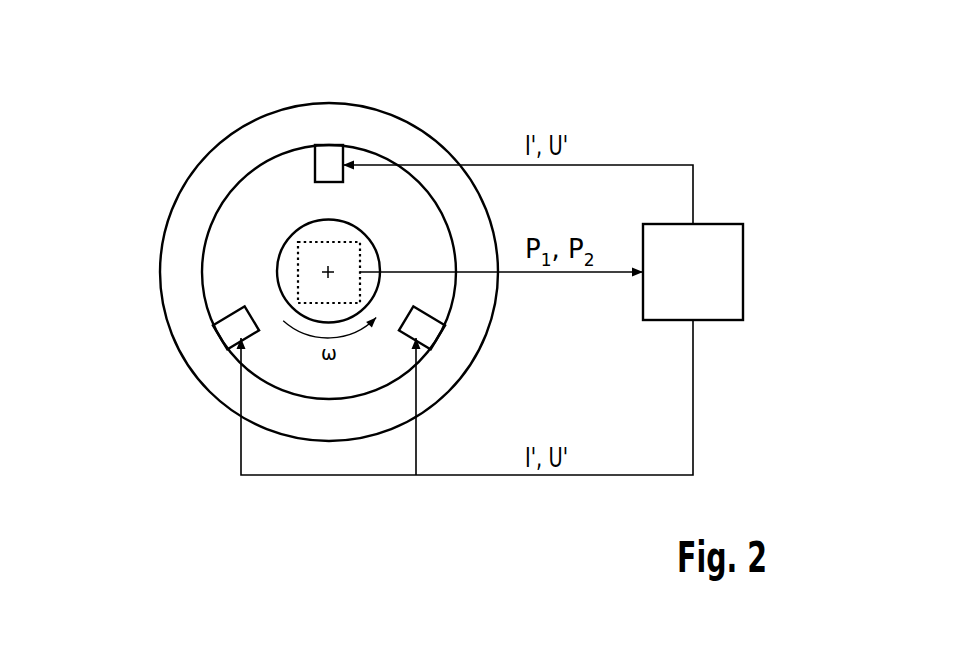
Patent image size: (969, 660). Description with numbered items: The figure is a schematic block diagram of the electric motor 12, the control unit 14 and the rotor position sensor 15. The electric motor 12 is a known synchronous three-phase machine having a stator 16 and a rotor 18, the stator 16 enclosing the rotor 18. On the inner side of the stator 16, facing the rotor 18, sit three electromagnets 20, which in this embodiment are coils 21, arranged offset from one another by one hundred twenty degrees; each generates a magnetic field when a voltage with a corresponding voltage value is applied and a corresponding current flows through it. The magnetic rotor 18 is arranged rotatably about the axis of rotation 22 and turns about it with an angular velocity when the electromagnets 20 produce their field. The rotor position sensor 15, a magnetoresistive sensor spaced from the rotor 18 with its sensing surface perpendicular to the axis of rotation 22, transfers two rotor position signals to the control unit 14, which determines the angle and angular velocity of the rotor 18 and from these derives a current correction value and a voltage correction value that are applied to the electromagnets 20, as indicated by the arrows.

The electric motor 12 is at (219, 89).
The control unit 14 is at (716, 224).
The rotor position sensor 15 is at (296, 246).
The stator 16 is at (363, 120).
The rotor 18 is at (279, 268).
The electromagnets 20 is at (326, 191).
The coils 21 is at (330, 150).
The axis of rotation 22 is at (328, 272).